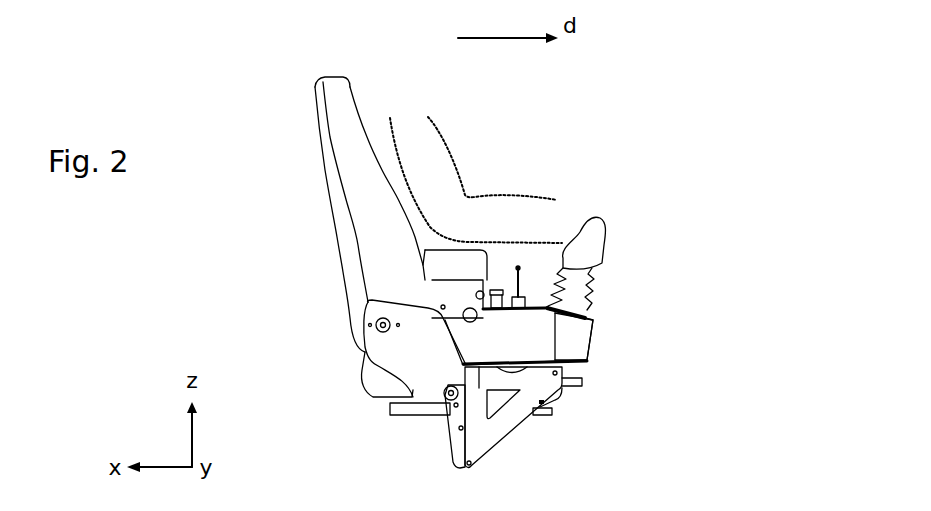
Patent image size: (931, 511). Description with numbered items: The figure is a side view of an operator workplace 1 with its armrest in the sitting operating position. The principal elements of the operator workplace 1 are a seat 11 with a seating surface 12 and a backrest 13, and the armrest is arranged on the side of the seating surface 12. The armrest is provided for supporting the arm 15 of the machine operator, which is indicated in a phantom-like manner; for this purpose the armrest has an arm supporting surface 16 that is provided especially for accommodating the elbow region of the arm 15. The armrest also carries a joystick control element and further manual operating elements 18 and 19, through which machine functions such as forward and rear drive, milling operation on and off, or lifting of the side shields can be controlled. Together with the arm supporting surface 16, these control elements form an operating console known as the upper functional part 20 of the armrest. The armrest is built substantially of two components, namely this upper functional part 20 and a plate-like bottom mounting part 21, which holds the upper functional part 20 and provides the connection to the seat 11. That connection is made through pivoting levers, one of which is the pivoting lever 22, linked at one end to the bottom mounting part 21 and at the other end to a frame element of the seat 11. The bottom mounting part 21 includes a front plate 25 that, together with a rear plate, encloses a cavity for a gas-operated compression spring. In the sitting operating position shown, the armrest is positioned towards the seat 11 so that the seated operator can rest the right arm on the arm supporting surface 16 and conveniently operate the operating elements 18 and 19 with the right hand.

The operator workplace 1 is at (678, 136).
The seat 11 is at (337, 235).
The seating surface 12 is at (605, 235).
The backrest 13 is at (327, 170).
The arm 15 is at (447, 180).
The arm supporting surface 16 is at (437, 267).
The manual operating element 18 is at (494, 288).
The manual operating element 19 is at (520, 296).
The upper functional part 20 is at (593, 332).
The bottom mounting part 21 is at (480, 430).
The pivoting lever 22 is at (447, 422).
The front plate 25 is at (513, 398).